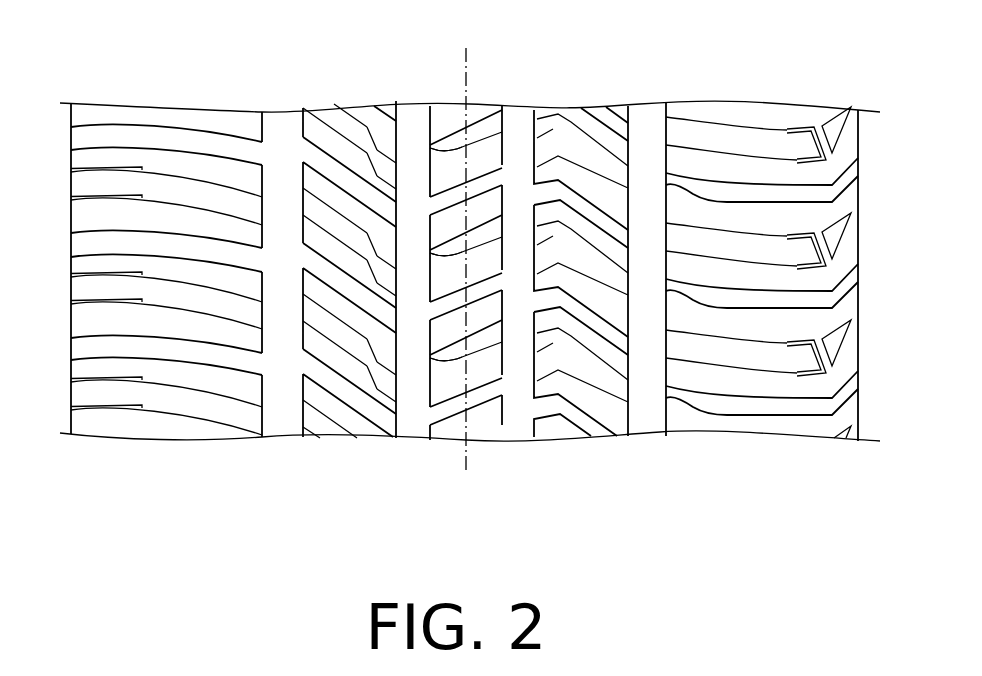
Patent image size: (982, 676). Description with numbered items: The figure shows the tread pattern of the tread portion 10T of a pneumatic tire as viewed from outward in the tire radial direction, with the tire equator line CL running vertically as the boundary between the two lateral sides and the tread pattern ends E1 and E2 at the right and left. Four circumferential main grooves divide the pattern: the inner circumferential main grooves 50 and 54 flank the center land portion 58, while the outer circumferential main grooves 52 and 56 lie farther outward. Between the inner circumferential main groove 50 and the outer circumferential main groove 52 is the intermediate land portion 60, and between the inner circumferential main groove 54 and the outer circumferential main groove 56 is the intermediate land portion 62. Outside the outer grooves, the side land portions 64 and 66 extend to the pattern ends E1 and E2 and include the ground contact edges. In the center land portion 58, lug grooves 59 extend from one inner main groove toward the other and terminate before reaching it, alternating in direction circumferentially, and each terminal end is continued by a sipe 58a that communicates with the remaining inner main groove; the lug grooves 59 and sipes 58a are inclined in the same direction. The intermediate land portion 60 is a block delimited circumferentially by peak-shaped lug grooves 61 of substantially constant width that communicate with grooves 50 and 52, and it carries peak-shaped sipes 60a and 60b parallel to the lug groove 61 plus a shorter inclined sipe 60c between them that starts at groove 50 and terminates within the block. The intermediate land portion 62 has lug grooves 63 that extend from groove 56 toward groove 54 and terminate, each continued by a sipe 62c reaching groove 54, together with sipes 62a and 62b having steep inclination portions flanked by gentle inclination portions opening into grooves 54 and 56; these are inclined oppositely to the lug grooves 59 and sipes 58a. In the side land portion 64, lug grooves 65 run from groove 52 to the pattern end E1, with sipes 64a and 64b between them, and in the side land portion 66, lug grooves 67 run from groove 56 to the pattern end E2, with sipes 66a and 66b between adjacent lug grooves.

The tread portion 10T is at (668, 70).
The inner circumferential main groove 50 is at (515, 157).
The outer circumferential main groove 52 is at (645, 128).
The inner circumferential main groove 54 is at (411, 132).
The outer circumferential main groove 56 is at (292, 118).
The center land portion 58 is at (445, 427).
The sipe 58a is at (463, 393).
The lug groove 59 is at (425, 427).
The intermediate land portion 60 is at (550, 423).
The sipe 60a is at (580, 125).
The sipe 60b is at (600, 178).
The sipe 60c is at (548, 140).
The lug groove 61 is at (593, 425).
The intermediate land portion 62 is at (362, 420).
The sipe 62a is at (323, 200).
The sipe 62b is at (350, 248).
The sipe 62c is at (383, 212).
The lug groove 63 is at (347, 428).
The side land portion 64 is at (708, 425).
The sipe 64a is at (777, 235).
The sipe 64b is at (778, 262).
The lug groove 65 is at (803, 412).
The side land portion 66 is at (195, 427).
The sipe 66a is at (243, 427).
The sipe 66b is at (217, 427).
The lug groove 67 is at (163, 348).
The tread pattern end E1 is at (860, 394).
The tread pattern end E2 is at (68, 328).
The tire equator line CL is at (463, 247).